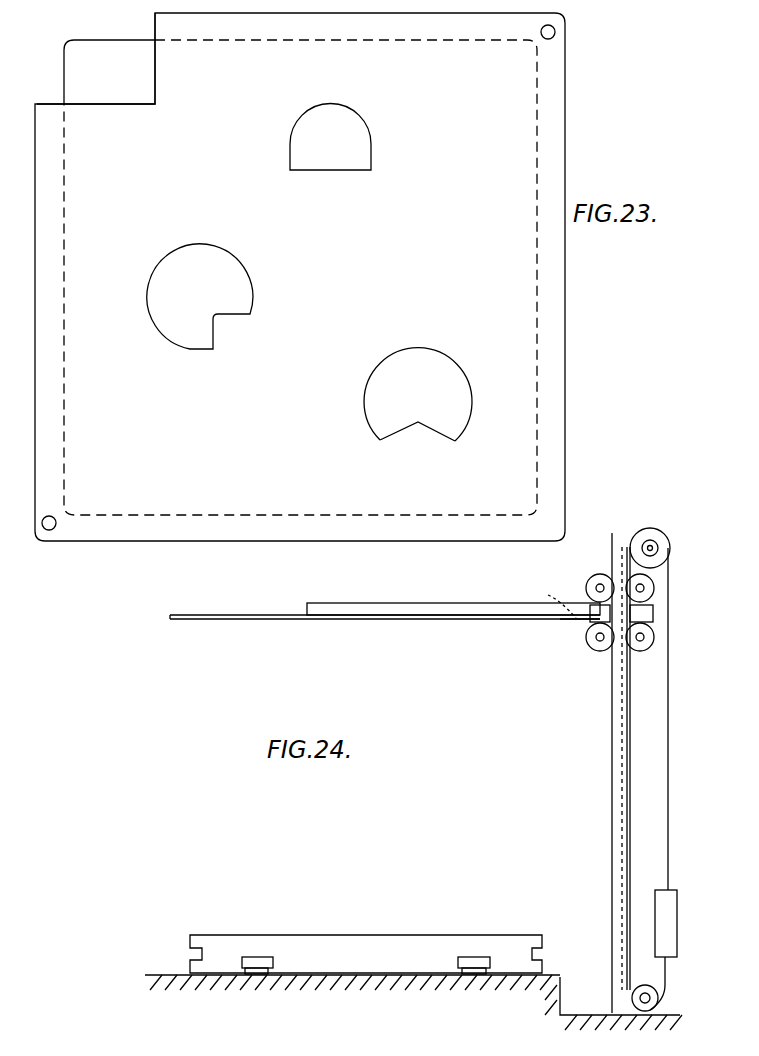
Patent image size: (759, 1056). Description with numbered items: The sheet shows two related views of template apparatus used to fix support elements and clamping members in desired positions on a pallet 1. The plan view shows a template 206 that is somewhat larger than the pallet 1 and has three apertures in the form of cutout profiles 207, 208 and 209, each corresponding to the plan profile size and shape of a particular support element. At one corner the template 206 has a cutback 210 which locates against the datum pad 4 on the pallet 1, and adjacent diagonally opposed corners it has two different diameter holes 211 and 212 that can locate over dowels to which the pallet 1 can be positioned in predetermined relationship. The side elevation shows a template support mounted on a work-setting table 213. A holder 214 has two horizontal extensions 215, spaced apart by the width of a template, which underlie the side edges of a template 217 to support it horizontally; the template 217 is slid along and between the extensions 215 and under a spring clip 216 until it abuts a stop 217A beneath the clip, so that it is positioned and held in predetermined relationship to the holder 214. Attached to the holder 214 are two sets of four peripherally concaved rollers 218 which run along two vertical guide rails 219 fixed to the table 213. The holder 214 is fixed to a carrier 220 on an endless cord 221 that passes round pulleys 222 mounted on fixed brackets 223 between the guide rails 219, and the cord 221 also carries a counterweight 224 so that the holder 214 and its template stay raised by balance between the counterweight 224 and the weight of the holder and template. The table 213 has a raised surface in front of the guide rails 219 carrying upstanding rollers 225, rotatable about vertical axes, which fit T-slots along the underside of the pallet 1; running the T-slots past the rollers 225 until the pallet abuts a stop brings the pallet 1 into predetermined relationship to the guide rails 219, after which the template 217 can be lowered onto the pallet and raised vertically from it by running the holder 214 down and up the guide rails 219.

In FIG. 23, the pallet 1 is at (566, 358).
In FIG. 24, the pallet 1 is at (305, 935).
In FIG. 23, the datum pad 4 is at (68, 48).
In FIG. 23, the template 206 is at (565, 287).
In FIG. 23, the cutout profile 207 is at (371, 147).
In FIG. 23, the cutout profile 208 is at (248, 293).
In FIG. 23, the cutout profile 209 is at (457, 367).
In FIG. 23, the cutback 210 is at (152, 68).
In FIG. 23, the hole 211 is at (49, 530).
In FIG. 23, the hole 212 is at (555, 35).
In FIG. 24, the work-setting table 213 is at (605, 1008).
In FIG. 24, the holder 214 is at (596, 608).
In FIG. 24, the horizontal extension 215 is at (365, 603).
In FIG. 24, the spring clip 216 is at (548, 600).
In FIG. 24, the template 217 is at (196, 615).
In FIG. 24, the stop 217A is at (575, 621).
In FIG. 24, the peripherally concaved roller 218 is at (632, 582).
In FIG. 24, the vertical guide rail 219 is at (612, 700).
In FIG. 24, the carrier 220 is at (586, 640).
In FIG. 24, the endless cord 221 is at (668, 710).
In FIG. 24, the pulley 222 is at (646, 528).
In FIG. 24, the fixed bracket 223 is at (636, 540).
In FIG. 24, the counterweight 224 is at (656, 900).
In FIG. 24, the upstanding roller 225 is at (245, 957).